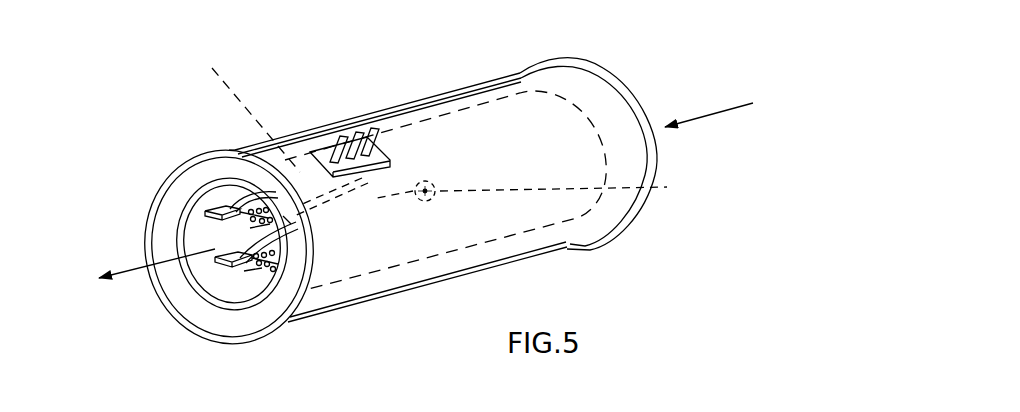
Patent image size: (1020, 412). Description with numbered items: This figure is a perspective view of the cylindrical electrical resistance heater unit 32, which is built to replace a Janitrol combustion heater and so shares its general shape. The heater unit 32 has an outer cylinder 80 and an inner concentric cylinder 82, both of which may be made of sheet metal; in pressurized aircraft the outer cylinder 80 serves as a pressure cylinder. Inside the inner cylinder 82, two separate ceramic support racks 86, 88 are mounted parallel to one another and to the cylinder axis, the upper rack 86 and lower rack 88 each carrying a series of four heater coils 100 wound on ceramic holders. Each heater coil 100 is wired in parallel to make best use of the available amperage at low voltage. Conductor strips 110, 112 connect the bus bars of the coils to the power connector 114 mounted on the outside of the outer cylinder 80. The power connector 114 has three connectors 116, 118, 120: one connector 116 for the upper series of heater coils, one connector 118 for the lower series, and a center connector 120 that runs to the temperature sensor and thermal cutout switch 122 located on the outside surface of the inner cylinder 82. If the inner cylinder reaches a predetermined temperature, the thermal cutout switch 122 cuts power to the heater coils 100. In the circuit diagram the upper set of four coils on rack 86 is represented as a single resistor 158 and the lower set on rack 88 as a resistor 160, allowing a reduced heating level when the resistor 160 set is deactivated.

The heater unit 32 is at (230, 122).
The outer cylinder 80 is at (521, 91).
The inner cylinder 82 is at (187, 193).
The ceramic support rack 86 is at (240, 212).
The ceramic support rack 88 is at (230, 258).
The heater coil 100 is at (254, 229).
The conductor strip 110 is at (207, 60).
The conductor strip 112 is at (287, 220).
The power connector 114 is at (390, 162).
The connector 116 is at (338, 136).
The connector 118 is at (368, 126).
The center connector 120 is at (347, 131).
The thermal cutout switch 122 is at (749, 172).
The resistor 158 is at (230, 208).
The resistor 160 is at (262, 276).